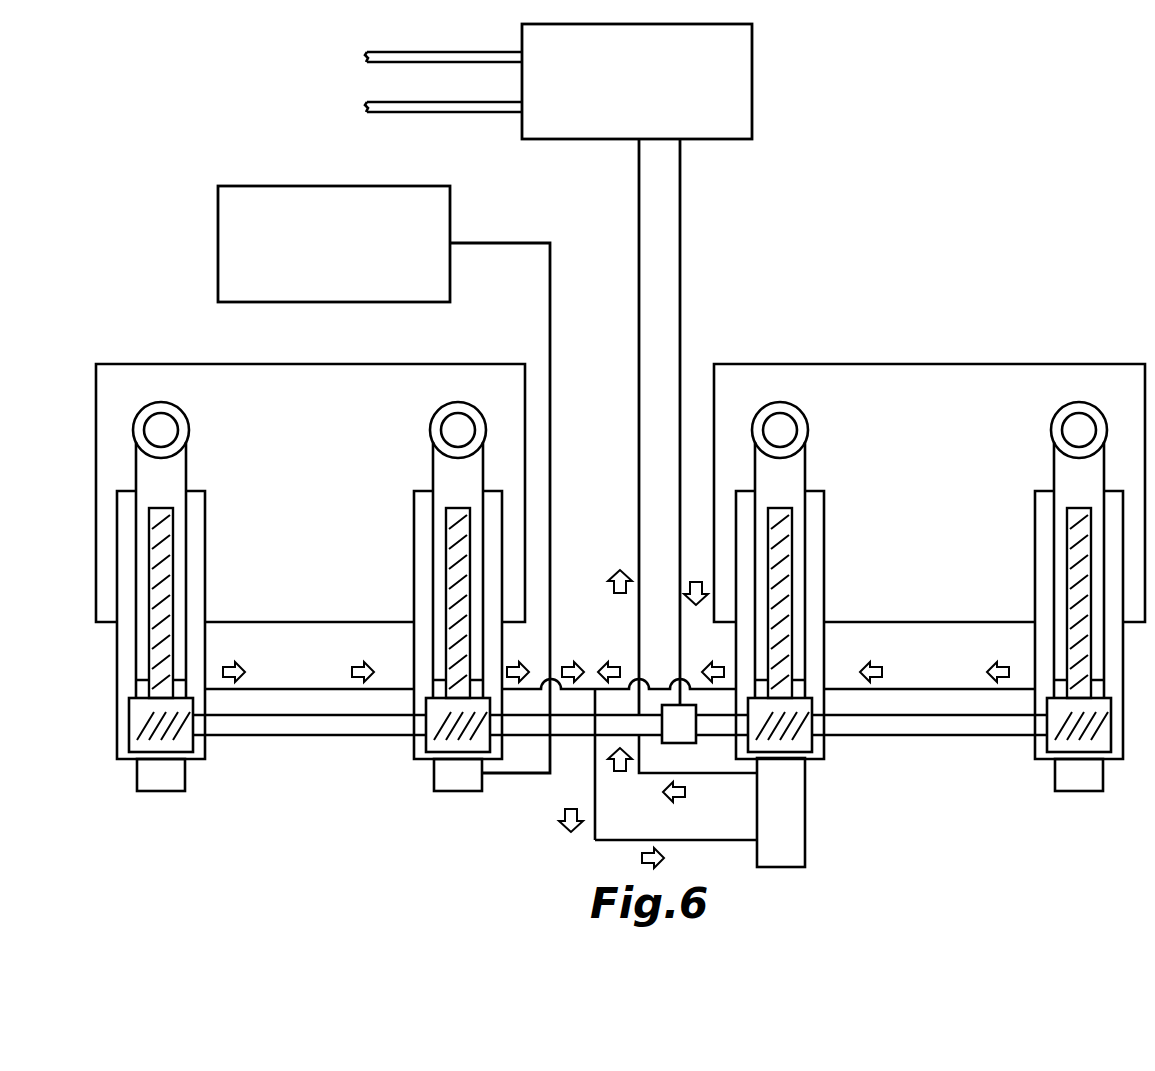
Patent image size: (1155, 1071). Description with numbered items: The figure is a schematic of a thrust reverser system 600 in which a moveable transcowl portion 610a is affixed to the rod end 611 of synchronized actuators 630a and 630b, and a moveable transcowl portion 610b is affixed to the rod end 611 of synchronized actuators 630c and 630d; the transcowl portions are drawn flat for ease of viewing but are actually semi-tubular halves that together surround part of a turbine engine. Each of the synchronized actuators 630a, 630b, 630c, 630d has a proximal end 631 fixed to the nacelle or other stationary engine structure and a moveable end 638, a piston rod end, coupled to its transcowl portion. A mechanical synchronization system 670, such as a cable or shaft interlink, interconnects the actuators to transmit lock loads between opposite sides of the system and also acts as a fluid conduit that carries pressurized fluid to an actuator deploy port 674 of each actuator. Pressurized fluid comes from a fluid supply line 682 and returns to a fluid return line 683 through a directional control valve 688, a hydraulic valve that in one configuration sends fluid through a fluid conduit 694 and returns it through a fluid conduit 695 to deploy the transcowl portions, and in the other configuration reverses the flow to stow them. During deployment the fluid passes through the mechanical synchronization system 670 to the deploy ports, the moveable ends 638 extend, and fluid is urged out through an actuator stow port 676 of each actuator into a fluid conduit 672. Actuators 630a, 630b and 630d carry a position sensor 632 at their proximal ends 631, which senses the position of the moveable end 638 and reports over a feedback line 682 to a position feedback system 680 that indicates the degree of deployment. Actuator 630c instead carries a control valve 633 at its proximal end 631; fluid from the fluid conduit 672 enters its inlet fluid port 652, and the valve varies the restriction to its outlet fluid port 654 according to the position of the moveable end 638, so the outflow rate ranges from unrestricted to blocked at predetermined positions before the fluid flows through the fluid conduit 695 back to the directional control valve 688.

The thrust reverser system 600 is at (953, 239).
The moveable transcowl portion 610a is at (310, 493).
The moveable transcowl portion 610b is at (929, 493).
The rod end 611 is at (175, 403).
The synchronized actuator 630a is at (206, 570).
The synchronized actuator 630b is at (414, 570).
The synchronized actuator 630c is at (825, 570).
The synchronized actuator 630d is at (1034, 570).
The proximal end 631 is at (121, 766).
The position sensor 632 is at (158, 793).
The control valve 633 is at (782, 868).
The moveable end 638 is at (175, 547).
The inlet fluid port 652 is at (755, 842).
The outlet fluid port 654 is at (753, 775).
The mechanical synchronization system 670 is at (315, 737).
The fluid conduit 672 is at (318, 688).
The actuator deploy port 674 is at (195, 738).
The actuator stow port 676 is at (188, 688).
The position feedback system 680 is at (334, 244).
The fluid supply line 682 is at (450, 52).
The fluid return line 683 is at (450, 102).
The directional control valve 688 is at (637, 81).
The fluid conduit 694 is at (681, 233).
The fluid conduit 695 is at (637, 205).